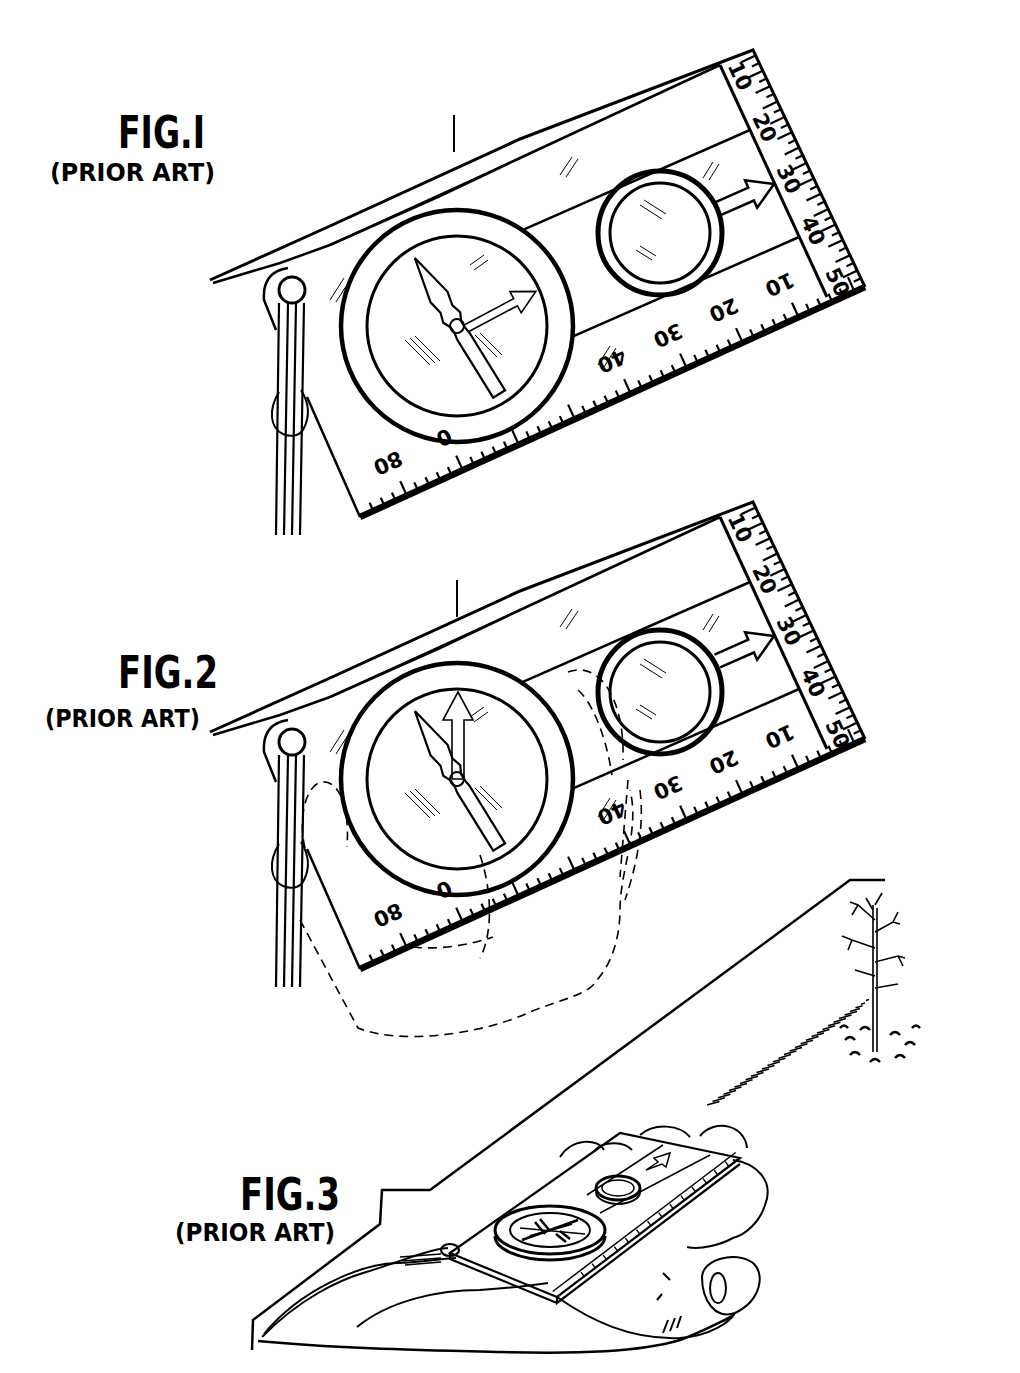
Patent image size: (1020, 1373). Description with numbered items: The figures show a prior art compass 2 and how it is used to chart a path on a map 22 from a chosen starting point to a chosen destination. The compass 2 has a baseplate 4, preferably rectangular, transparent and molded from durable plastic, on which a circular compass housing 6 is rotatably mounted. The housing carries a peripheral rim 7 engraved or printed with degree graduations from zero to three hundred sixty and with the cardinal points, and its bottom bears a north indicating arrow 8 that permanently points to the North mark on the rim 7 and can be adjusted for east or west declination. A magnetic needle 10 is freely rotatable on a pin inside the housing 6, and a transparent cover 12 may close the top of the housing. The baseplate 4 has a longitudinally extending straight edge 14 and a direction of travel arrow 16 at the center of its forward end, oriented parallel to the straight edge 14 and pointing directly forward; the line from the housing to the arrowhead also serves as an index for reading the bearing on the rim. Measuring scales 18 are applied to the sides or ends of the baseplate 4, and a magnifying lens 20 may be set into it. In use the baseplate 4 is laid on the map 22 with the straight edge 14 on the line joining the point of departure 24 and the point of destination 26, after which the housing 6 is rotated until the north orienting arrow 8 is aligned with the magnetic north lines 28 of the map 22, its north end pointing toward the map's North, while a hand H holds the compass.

In FIG. 1, the compass 2 is at (532, 280).
In FIG. 2, the compass 2 is at (528, 733).
In FIG. 1, the baseplate 4 is at (443, 200).
In FIG. 2, the baseplate 4 is at (685, 545).
In FIG. 3, the baseplate 4 is at (600, 1158).
In FIG. 1, the compass housing 6 is at (388, 426).
In FIG. 2, the compass housing 6 is at (417, 891).
In FIG. 3, the compass housing 6 is at (520, 1206).
In FIG. 1, the peripheral rim 7 is at (349, 333).
In FIG. 2, the peripheral rim 7 is at (357, 841).
In FIG. 1, the north indicating arrow 8 is at (503, 291).
In FIG. 2, the north indicating arrow 8 is at (470, 756).
In FIG. 3, the north indicating arrow 8 is at (735, 1231).
In FIG. 1, the magnetic needle 10 is at (432, 294).
In FIG. 2, the magnetic needle 10 is at (432, 750).
In FIG. 3, the magnetic needle 10 is at (682, 1342).
In FIG. 1, the transparent cover 12 is at (503, 450).
In FIG. 2, the transparent cover 12 is at (493, 900).
In FIG. 1, the straight edge 14 is at (590, 120).
In FIG. 2, the straight edge 14 is at (618, 558).
In FIG. 1, the direction of travel arrow 16 is at (752, 176).
In FIG. 2, the direction of travel arrow 16 is at (744, 637).
In FIG. 3, the direction of travel arrow 16 is at (640, 1142).
In FIG. 1, the measuring scales 18 is at (667, 384).
In FIG. 2, the measuring scales 18 is at (755, 790).
In FIG. 1, the magnifying lens 20 is at (690, 240).
In FIG. 2, the magnifying lens 20 is at (700, 702).
In FIG. 3, the magnifying lens 20 is at (744, 1157).
In FIG. 1, the map 22 is at (278, 181).
In FIG. 1, the point of departure 24 is at (210, 280).
In FIG. 2, the point of departure 24 is at (210, 732).
In FIG. 1, the point of destination 26 is at (796, 44).
In FIG. 2, the point of destination 26 is at (796, 498).
In FIG. 1, the magnetic north lines 28 is at (478, 92).
In FIG. 2, the magnetic north lines 28 is at (481, 556).
In FIG. 2, the hand H is at (622, 931).
In FIG. 3, the hand H is at (440, 1242).